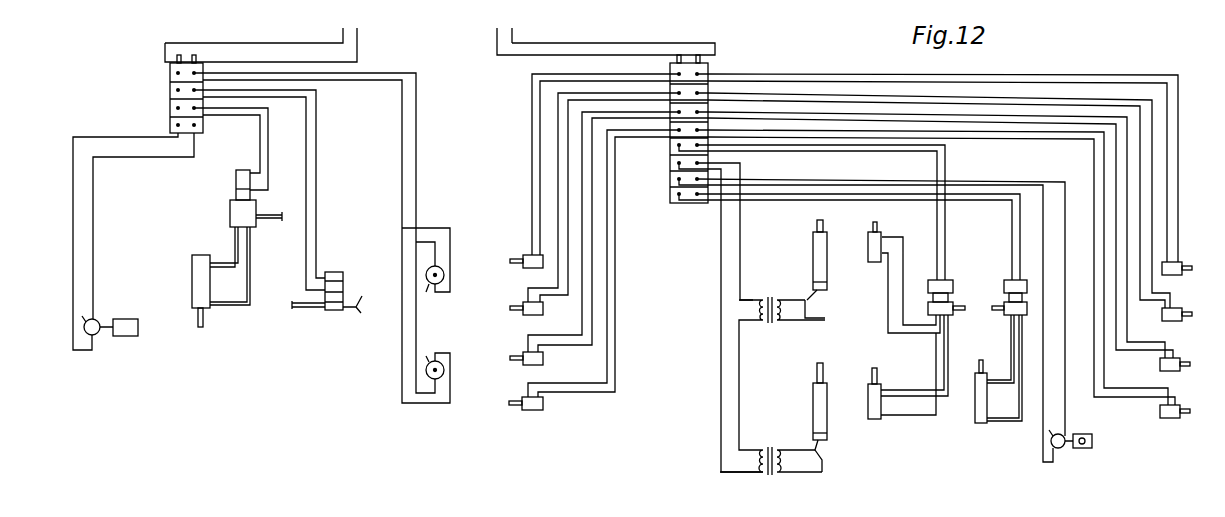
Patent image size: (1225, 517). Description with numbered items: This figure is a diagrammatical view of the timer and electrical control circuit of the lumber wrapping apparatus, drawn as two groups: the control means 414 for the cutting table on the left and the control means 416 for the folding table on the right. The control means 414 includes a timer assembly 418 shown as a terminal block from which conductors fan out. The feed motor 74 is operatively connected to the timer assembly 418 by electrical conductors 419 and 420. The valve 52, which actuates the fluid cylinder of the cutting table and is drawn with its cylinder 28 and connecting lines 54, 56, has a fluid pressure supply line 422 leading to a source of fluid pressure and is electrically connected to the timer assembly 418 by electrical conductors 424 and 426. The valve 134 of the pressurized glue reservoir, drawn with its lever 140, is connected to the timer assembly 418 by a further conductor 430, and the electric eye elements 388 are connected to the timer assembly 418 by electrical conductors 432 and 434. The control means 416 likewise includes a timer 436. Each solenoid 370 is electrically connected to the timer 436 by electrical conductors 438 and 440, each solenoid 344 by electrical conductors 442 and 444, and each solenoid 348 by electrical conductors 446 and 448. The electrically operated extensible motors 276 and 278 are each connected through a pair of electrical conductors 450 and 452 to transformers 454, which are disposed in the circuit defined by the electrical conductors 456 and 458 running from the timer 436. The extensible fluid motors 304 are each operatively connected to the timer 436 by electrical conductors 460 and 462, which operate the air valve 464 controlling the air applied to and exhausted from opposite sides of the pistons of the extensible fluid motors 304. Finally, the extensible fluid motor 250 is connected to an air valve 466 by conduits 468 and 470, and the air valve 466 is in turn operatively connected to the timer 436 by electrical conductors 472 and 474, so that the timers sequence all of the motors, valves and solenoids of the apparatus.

The control means 414 is at (378, 68).
The timer assembly 418 is at (167, 105).
The electrical conductor 419 is at (95, 236).
The electrical conductor 420 is at (72, 240).
The fluid pressure supply line 422 is at (279, 223).
The electrical conductor 424 is at (258, 148).
The electrical conductor 426 is at (268, 158).
The electrical conductor 430 is at (317, 187).
The electrical conductor 432 is at (418, 193).
The electrical conductor 434 is at (400, 185).
The valve 52 is at (229, 207).
The hose 54 is at (223, 269).
The hose 56 is at (235, 308).
The cylinder 28 is at (192, 295).
The feed motor 74 is at (131, 333).
The valve 134 is at (342, 273).
The switch lever 140 is at (362, 295).
The electric eye elements 388 is at (435, 322).
The control means 416 is at (788, 70).
The timer 436 is at (668, 175).
The electrical conductor 438 is at (530, 189).
The electrical conductor 440 is at (1179, 223).
The electrical conductor 442 is at (1152, 345).
The electrical conductor 444 is at (1117, 333).
The electrical conductor 446 is at (1125, 397).
The electrical conductor 448 is at (1133, 388).
The electrical conductor 456 is at (741, 283).
The electrical conductor 458 is at (720, 277).
The electrical conductor 460 is at (938, 250).
The electrical conductor 462 is at (947, 263).
The air valve 464 is at (951, 280).
The air valve 466 is at (1012, 312).
The conduit 468 is at (1000, 385).
The conduit 470 is at (1003, 422).
The electrical conductor 472 is at (979, 197).
The electrical conductor 474 is at (961, 201).
The solenoid 370 is at (527, 266).
The solenoid 344 is at (530, 352).
The solenoid 348 is at (537, 411).
The extensible fluid motor 304 is at (864, 246).
The extensible fluid motor 250 is at (982, 430).
The electrically operated extensible motor 278 is at (827, 276).
The electrically operated extensible motor 276 is at (827, 386).
The electrical conductor 450 is at (825, 318).
The electrical conductor 452 is at (808, 322).
The transformer 454 is at (770, 328).